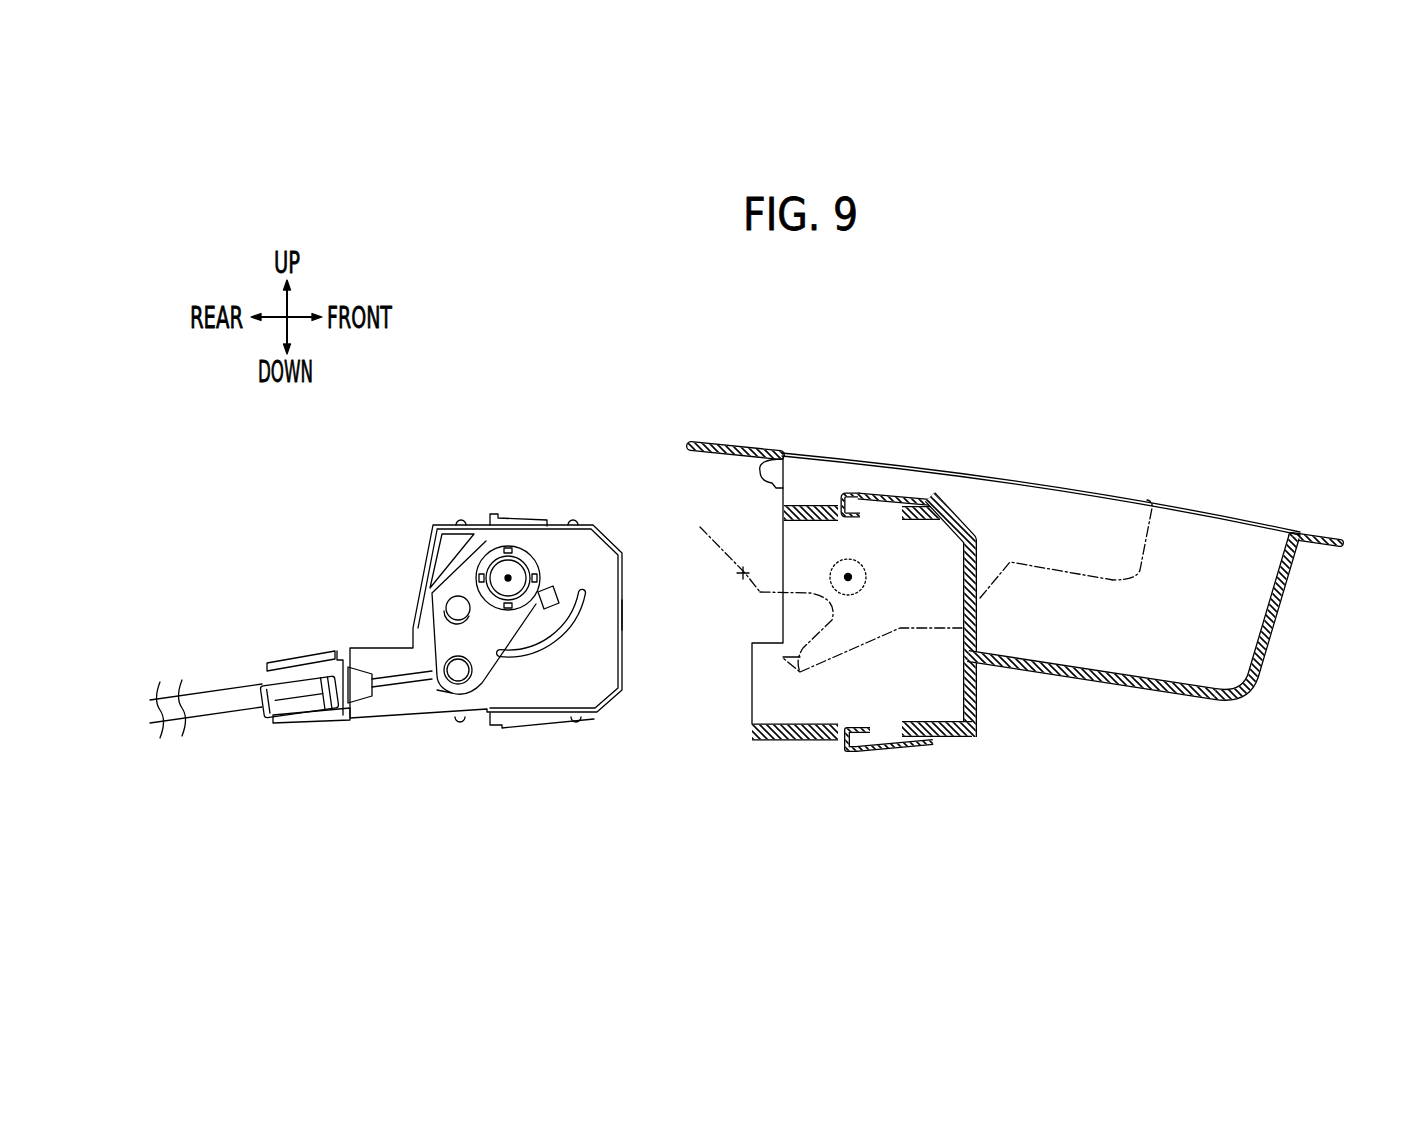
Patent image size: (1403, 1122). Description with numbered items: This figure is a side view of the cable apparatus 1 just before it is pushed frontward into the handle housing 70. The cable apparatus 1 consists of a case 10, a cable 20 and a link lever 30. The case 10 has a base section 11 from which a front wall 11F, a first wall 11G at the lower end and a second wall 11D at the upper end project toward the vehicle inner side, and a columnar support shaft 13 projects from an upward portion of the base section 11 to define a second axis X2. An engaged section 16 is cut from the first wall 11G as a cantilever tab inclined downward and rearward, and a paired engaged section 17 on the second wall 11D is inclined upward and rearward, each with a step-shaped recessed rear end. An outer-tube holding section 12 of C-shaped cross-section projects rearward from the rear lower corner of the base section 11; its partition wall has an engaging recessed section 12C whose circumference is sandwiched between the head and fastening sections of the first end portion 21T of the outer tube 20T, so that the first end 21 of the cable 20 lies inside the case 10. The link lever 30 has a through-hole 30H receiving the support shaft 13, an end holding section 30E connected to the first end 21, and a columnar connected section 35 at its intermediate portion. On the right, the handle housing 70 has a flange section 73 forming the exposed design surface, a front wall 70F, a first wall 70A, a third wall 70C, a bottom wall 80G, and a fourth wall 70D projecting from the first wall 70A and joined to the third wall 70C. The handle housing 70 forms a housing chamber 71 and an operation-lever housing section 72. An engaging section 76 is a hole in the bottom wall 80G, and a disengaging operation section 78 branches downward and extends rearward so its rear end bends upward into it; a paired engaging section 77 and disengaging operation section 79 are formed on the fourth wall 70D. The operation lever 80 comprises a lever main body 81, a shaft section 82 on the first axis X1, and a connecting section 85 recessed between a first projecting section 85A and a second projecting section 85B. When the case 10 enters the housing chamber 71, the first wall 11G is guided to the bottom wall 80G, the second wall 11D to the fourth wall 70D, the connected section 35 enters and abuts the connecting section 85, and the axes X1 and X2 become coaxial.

The cable apparatus 1 is at (336, 586).
The case 10 is at (357, 738).
The base section 11 is at (587, 661).
The second wall 11D is at (450, 519).
The front wall 11F is at (618, 616).
The first wall 11G is at (582, 722).
The outer-tube holding section 12 is at (311, 700).
The engaging recessed section 12C is at (332, 687).
The support shaft 13 is at (499, 552).
The engaged section 16 is at (505, 726).
The engaged section 17 is at (505, 513).
The cable 20 is at (388, 700).
The outer tube 20T is at (198, 704).
The first end 21 is at (462, 688).
The first end portion 21T is at (292, 700).
The link lever 30 is at (446, 568).
The end holding section 30E is at (465, 690).
The through-hole 30H is at (513, 553).
The connected section 35 is at (450, 600).
The second axis X2 is at (512, 578).
The handle housing 70 is at (1297, 622).
The first wall 70A is at (1228, 518).
The third wall 70C is at (981, 564).
The fourth wall 70D is at (784, 513).
The front wall 70F is at (1272, 667).
The housing chamber 71 is at (955, 671).
The operation-lever housing section 72 is at (1198, 669).
The flange section 73 is at (728, 440).
The engaging section 76 is at (873, 752).
The engaging section 77 is at (868, 495).
The disengaging operation section 78 is at (850, 754).
The disengaging operation section 79 is at (849, 490).
The operation lever 80 is at (1098, 505).
The bottom wall 80G is at (1083, 676).
The lever main body 81 is at (1097, 562).
The shaft section 82 is at (857, 582).
The connecting section 85 is at (760, 592).
The first projecting section 85A is at (700, 527).
The second projecting section 85B is at (783, 660).
The first axis X1 is at (851, 577).